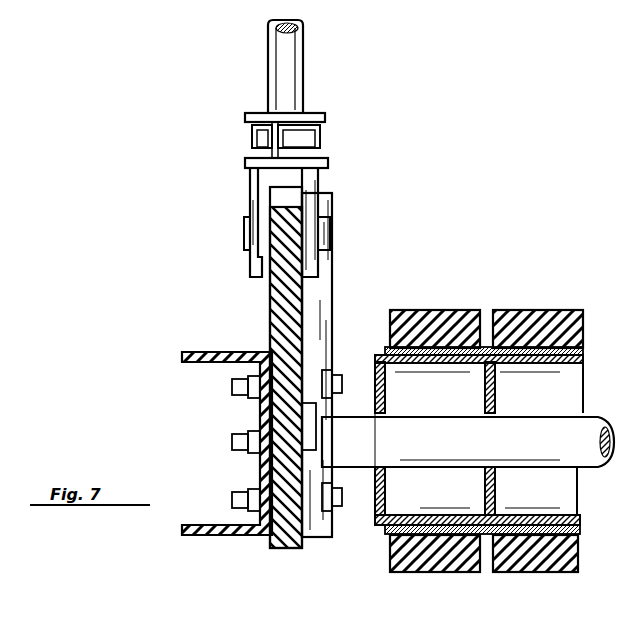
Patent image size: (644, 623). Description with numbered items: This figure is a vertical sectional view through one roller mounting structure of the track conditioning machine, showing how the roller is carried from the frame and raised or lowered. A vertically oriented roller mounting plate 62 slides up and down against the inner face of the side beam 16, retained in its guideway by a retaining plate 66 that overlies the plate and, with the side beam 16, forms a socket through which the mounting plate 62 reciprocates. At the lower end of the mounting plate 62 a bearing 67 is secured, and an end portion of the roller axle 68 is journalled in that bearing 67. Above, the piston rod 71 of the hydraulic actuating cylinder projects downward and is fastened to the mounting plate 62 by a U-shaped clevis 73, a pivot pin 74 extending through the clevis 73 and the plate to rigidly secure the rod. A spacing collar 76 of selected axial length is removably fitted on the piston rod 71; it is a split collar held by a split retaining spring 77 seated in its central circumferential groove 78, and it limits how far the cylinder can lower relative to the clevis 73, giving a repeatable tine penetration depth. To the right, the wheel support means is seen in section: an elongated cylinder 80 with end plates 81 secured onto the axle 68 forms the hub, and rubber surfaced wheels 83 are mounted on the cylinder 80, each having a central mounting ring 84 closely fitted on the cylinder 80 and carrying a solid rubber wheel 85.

The side beam 16 is at (200, 352).
The roller mounting plate 62 is at (278, 540).
The retaining plate 66 is at (322, 300).
The bearing 67 is at (322, 447).
The roller axle 68 is at (540, 398).
The piston rod 71 is at (280, 44).
The U-shaped clevis 73 is at (320, 266).
The pivot pin 74 is at (331, 225).
The spacing collar 76 is at (313, 114).
The split retaining spring 77 is at (255, 137).
The central circumferential groove 78 is at (322, 128).
The elongated cylinder 80 is at (375, 507).
The end plate 81 is at (485, 488).
The rubber surfaced wheel 83 is at (497, 300).
The central mounting ring 84 is at (386, 357).
The rubber wheel 85 is at (450, 310).